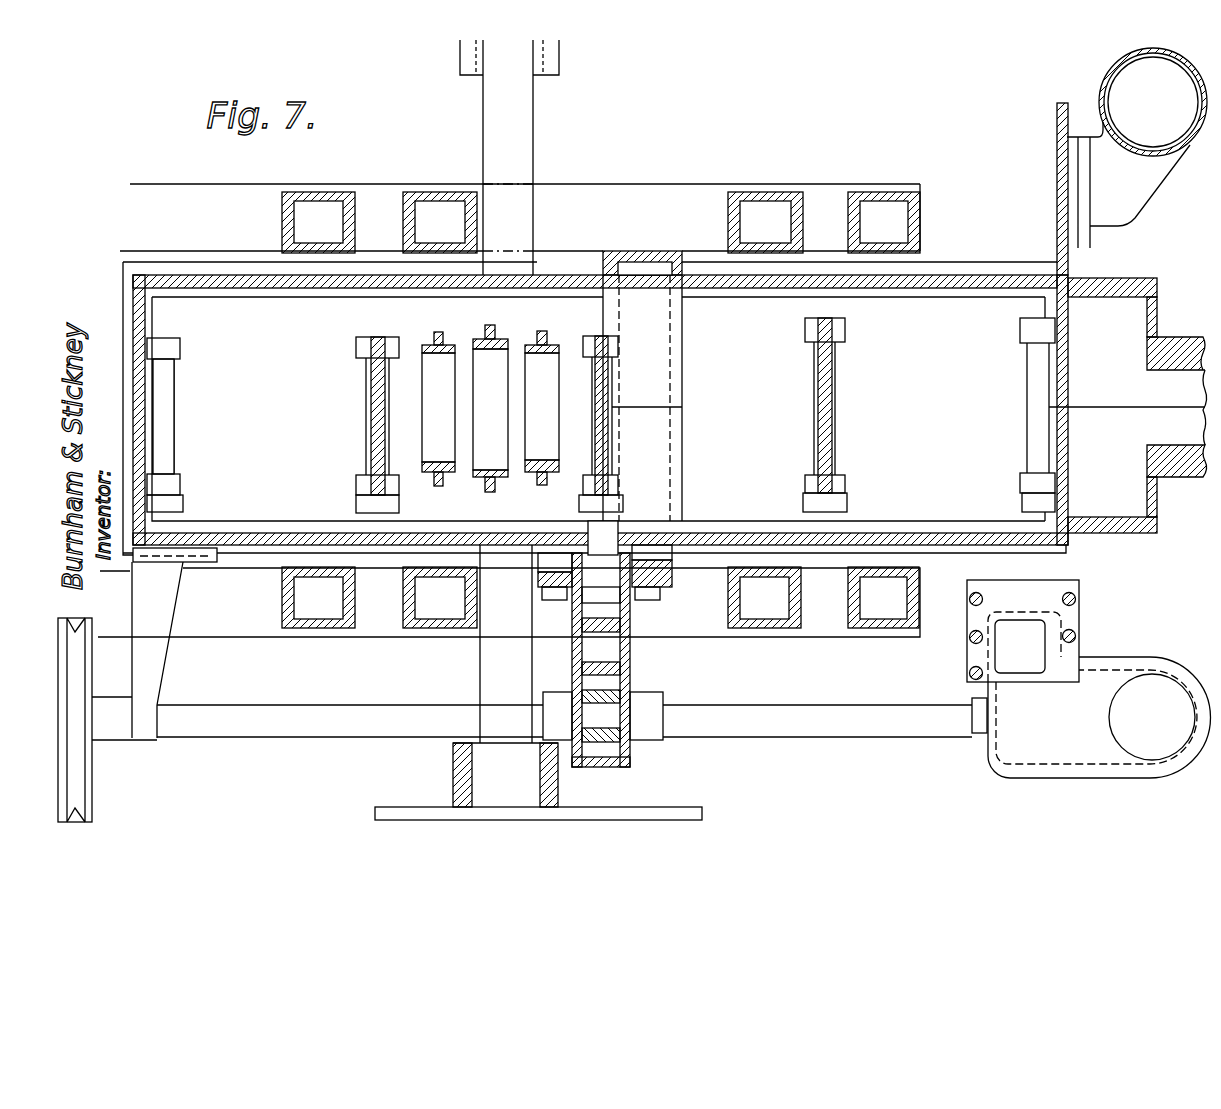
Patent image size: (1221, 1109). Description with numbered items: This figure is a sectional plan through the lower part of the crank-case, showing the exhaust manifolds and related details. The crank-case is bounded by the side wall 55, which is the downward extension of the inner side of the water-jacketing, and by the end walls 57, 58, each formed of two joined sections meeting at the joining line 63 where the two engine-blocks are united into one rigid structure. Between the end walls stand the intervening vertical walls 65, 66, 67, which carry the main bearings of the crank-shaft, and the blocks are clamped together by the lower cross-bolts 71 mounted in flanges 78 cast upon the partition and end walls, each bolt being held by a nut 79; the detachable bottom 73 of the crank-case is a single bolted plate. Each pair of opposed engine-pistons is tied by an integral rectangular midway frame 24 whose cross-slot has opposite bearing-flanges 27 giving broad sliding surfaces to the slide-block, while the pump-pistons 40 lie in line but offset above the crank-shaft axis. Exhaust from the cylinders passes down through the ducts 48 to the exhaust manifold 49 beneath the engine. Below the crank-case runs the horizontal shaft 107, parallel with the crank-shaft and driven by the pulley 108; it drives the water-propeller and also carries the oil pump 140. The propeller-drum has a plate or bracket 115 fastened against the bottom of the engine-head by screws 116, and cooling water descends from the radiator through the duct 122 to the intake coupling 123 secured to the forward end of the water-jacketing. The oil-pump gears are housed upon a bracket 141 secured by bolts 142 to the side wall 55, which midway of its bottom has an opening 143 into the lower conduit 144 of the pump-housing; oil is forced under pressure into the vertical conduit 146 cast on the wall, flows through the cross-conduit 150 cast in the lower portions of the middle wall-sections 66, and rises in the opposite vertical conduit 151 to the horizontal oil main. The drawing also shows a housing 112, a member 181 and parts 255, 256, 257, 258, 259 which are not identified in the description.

The midway frame 24 is at (434, 338).
The bearing-flanges 27 is at (430, 485).
The pump-pistons 40 is at (485, 489).
The duct 48 is at (403, 222).
The exhaust manifold 49 is at (618, 184).
The crank-case side wall 55 is at (948, 286).
The crank-case end wall 57 is at (145, 381).
The crank-case end wall 58 is at (1068, 365).
The line of joining 63 is at (650, 408).
The intervening vertical wall 65 is at (371, 438).
The intervening vertical wall 66 is at (595, 448).
The intervening vertical wall 67 is at (818, 381).
The lower cross-bolts 71 is at (175, 442).
The detachable crank-case bottom 73 is at (745, 350).
The flange 78 is at (181, 350).
The nut 79 is at (184, 498).
The horizontal shaft 107 is at (539, 716).
The pulley 108 is at (92, 773).
The belt housing 112 is at (1128, 657).
The plate or bracket 115 is at (1079, 585).
The screws 116 is at (1075, 632).
The duct 122 is at (1200, 102).
The intake coupling 123 is at (1128, 185).
The oil pump 140 is at (638, 673).
The bracket 141 is at (538, 578).
The bolts 142 is at (553, 600).
The opening 143 is at (592, 530).
The lower conduit 144 is at (600, 598).
The vertical conduit 146 is at (608, 560).
The cross-conduit 150 is at (683, 345).
The vertical conduit 151 is at (658, 252).
The bearing housing 181 is at (1158, 498).
The column 255 is at (505, 644).
The column 256 is at (508, 157).
The base plate 257 is at (712, 818).
The post 258 is at (548, 75).
The post 259 is at (460, 72).